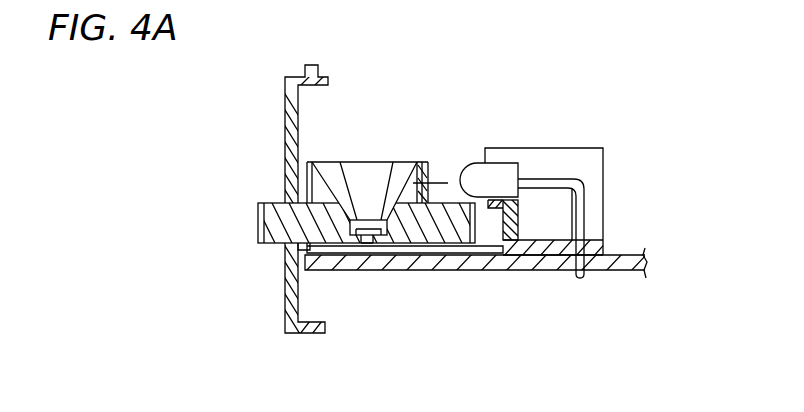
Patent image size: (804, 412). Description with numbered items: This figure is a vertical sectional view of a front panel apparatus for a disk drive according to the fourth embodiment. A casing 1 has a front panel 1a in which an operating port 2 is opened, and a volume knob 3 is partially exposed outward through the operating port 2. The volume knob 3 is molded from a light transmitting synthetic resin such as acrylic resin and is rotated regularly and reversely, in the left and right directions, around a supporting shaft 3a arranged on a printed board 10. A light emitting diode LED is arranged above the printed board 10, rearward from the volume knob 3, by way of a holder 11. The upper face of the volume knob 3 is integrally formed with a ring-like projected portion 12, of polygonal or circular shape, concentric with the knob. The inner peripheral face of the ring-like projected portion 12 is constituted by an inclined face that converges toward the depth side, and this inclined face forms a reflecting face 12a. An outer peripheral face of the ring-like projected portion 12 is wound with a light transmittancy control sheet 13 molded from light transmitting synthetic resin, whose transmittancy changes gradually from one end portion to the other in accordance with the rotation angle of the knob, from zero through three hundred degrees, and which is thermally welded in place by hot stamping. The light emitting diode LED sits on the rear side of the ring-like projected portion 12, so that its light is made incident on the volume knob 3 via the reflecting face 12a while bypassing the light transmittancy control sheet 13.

The casing 1 is at (265, 199).
The front panel 1a is at (292, 149).
The operating port 2 is at (283, 246).
The volume knob 3 is at (258, 213).
The supporting shaft 3a is at (366, 243).
The printed board 10 is at (617, 265).
The holder 11 is at (600, 248).
The ring-like projected portion 12 is at (369, 174).
The reflecting face 12a is at (420, 165).
The light transmittancy control sheet 13 is at (413, 210).
The light emitting diode LED is at (473, 163).